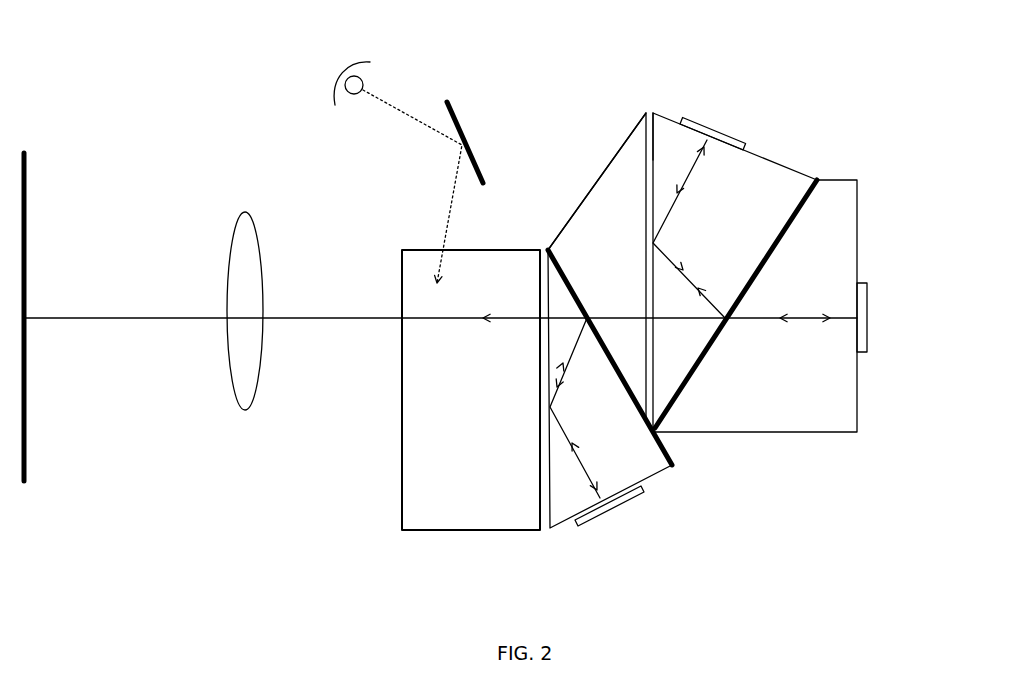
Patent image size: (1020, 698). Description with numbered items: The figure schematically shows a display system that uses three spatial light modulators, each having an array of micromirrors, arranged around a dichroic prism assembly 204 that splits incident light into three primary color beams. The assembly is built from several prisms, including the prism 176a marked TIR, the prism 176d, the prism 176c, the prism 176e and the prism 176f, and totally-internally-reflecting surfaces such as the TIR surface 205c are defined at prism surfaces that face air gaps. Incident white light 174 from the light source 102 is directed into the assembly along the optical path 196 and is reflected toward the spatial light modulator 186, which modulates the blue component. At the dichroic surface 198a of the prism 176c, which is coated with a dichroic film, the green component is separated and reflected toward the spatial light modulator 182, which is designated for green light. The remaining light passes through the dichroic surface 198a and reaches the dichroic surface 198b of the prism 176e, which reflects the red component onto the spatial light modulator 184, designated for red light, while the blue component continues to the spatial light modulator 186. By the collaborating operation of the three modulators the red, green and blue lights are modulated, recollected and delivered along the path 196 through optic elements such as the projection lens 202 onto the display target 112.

The display target 112 is at (27, 175).
The optical axis / light path 196 is at (440, 306).
The projection lens 202 is at (247, 212).
The light source 102 is at (352, 65).
The incident white light 174 is at (423, 186).
The prism 176a is at (402, 427).
The dichroic prism assembly 204 is at (632, 132).
The prism 176d is at (597, 267).
The dichroic surface 198a is at (675, 457).
The prism 176c is at (610, 389).
The spatial light modulator 182 is at (611, 511).
The prism 176e is at (735, 272).
The spatial light modulator 184 is at (713, 121).
The TIR surface 205c is at (653, 123).
The dichroic surface 198b is at (818, 193).
The prism 176f is at (756, 306).
The spatial light modulator 186 is at (885, 317).